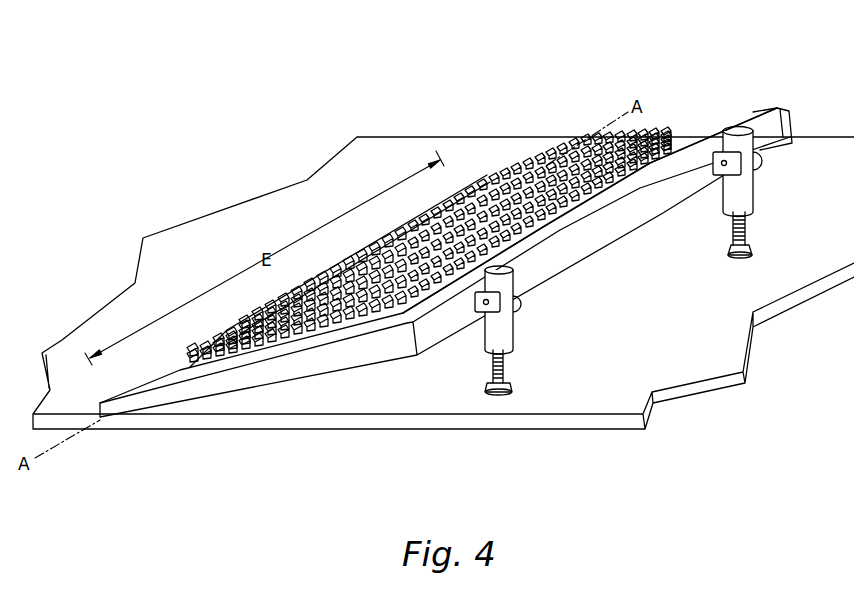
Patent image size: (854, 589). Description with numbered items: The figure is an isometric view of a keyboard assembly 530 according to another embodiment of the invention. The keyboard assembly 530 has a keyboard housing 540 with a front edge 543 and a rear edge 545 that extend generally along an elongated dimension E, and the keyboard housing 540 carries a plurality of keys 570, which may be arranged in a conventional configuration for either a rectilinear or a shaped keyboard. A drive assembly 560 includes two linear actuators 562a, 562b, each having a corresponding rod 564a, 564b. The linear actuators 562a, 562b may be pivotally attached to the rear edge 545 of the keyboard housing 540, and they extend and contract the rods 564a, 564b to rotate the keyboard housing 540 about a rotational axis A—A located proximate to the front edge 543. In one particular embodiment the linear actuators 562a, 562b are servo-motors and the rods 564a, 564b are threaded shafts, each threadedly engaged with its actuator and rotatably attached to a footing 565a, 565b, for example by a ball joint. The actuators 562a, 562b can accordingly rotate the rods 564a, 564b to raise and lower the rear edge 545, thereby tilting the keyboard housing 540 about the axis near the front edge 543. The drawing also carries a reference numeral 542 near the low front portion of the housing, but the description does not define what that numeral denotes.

The keyboard assembly 530 is at (557, 137).
The keyboard housing 540 is at (672, 137).
The wedge 542 is at (180, 373).
The front edge 543 is at (274, 300).
The rear edge 545 is at (790, 125).
The drive assembly 560 is at (710, 114).
The linear actuator 562a is at (513, 333).
The linear actuator 562b is at (753, 200).
The rod 564a is at (506, 375).
The rod 564b is at (746, 233).
The footing 565a is at (487, 386).
The footing 565b is at (738, 258).
The keys 570 is at (510, 178).